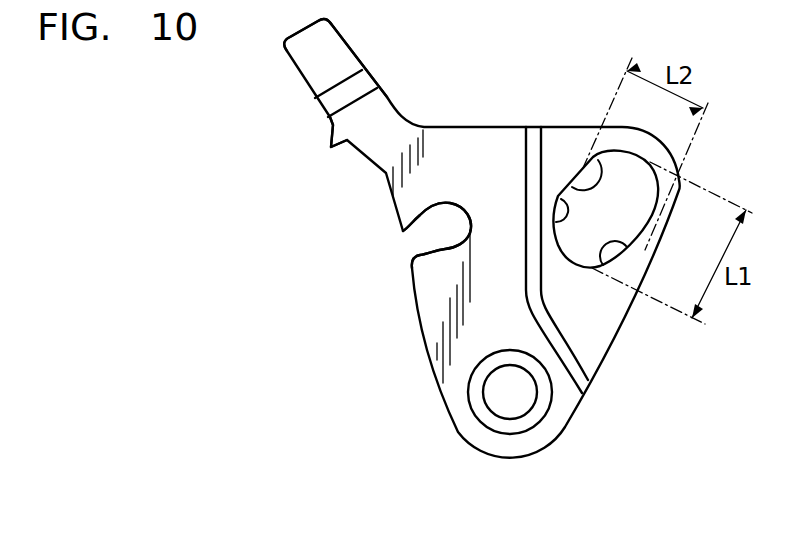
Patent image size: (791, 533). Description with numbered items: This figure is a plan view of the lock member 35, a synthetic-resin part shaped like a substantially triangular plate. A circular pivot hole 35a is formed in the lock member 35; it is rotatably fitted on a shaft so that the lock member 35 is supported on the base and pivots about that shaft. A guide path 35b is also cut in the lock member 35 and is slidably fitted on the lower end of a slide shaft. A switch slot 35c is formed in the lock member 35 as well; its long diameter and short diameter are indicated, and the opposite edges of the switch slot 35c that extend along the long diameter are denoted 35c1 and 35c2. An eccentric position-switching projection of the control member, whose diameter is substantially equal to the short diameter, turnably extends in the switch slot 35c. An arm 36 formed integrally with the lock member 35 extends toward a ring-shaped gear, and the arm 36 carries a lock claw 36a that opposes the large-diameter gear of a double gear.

The lock member 35 is at (413, 330).
The pivot hole 35a is at (504, 410).
The guide path 35b is at (417, 256).
The switch slot 35c is at (580, 189).
The edge of switch slot 35c1 is at (526, 217).
The edge of switch slot 35c2 is at (597, 270).
The arm 36 is at (305, 76).
The lock claw 36a is at (329, 143).